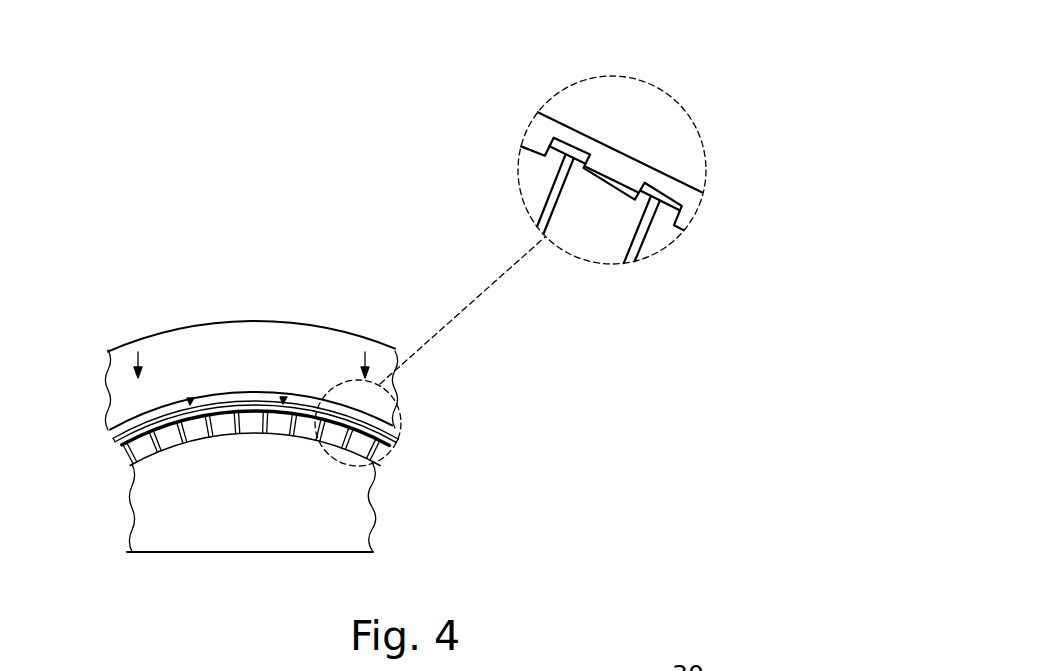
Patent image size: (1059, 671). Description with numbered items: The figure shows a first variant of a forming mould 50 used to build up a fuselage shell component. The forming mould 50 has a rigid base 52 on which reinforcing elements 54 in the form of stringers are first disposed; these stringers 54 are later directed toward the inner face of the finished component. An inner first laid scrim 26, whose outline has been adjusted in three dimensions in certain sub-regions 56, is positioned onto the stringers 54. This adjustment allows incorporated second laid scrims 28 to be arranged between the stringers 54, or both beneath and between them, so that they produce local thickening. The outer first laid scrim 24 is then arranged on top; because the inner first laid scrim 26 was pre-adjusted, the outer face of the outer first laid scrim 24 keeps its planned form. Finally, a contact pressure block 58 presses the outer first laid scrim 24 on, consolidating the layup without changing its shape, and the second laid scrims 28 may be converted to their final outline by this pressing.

The forming mould 50 is at (247, 200).
The contact pressure block 58 is at (266, 330).
The outer first laid scrim 24 is at (218, 405).
The incorporated second laid scrims 28 is at (191, 405).
The inner first laid scrim 26 is at (133, 462).
The reinforcing elements 54 is at (160, 437).
The sub-regions 56 is at (187, 442).
The rigid base 52 is at (357, 539).